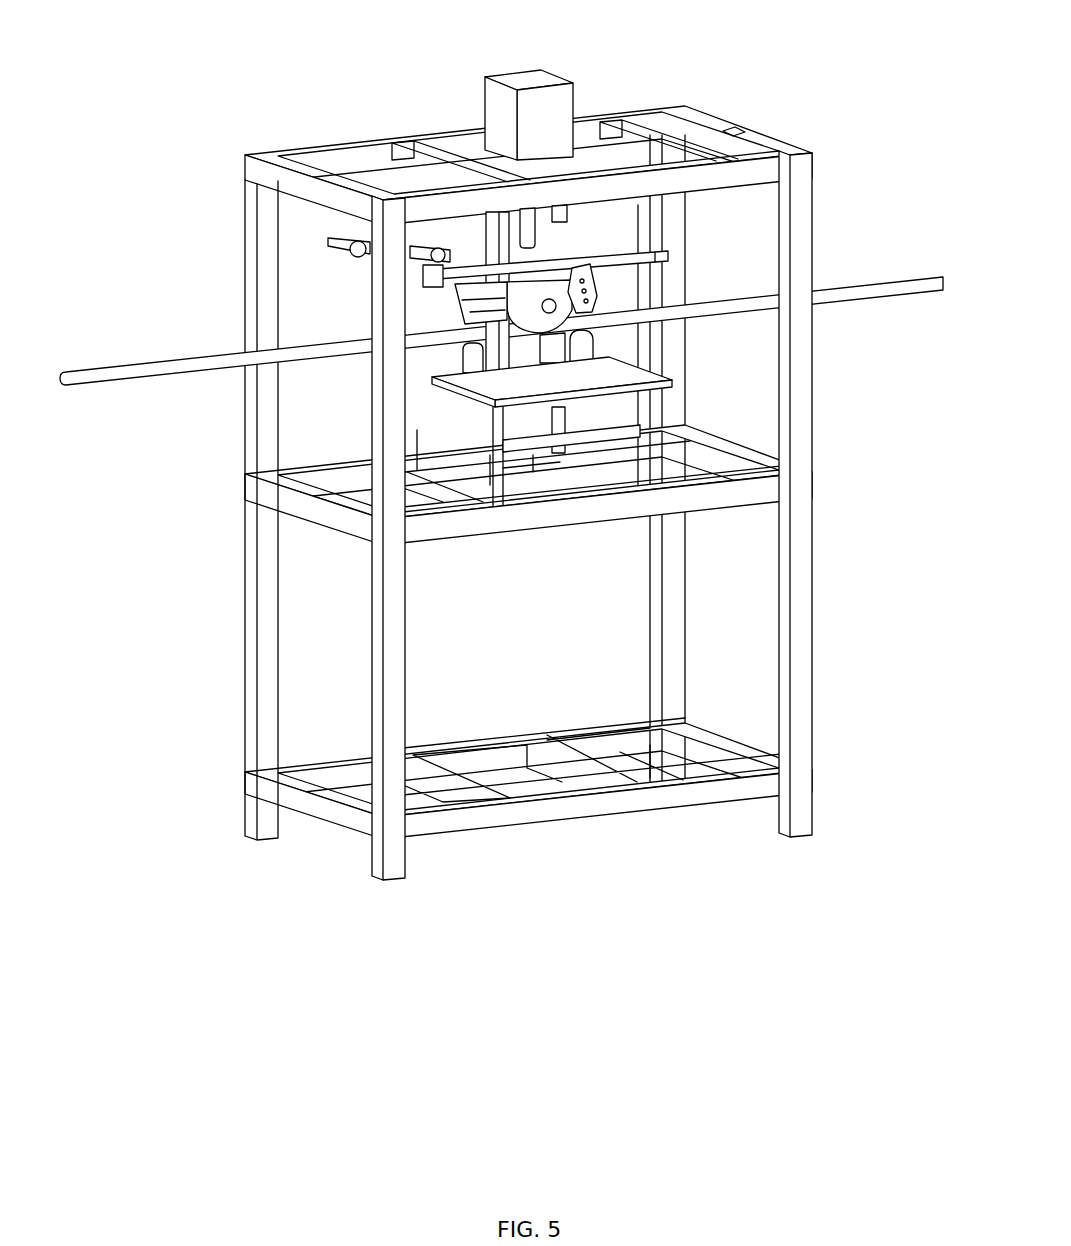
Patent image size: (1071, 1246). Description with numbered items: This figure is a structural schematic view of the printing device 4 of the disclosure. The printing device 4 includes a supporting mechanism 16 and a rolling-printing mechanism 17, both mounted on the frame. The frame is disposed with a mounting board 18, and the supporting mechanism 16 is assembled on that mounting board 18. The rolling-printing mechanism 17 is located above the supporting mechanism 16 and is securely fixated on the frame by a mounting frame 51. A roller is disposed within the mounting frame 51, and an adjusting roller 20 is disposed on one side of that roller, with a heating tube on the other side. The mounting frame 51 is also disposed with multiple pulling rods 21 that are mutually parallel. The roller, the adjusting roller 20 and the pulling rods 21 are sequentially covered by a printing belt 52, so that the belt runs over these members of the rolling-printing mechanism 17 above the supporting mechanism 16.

The printing device 4 is at (528, 455).
The supporting mechanism 16 is at (465, 365).
The rolling-printing mechanism 17 is at (582, 282).
The mounting board 18 is at (606, 352).
The adjusting roller 20 is at (487, 282).
The pulling rods 21 is at (464, 280).
The mounting frame 51 is at (585, 304).
The printing belt 52 is at (462, 296).